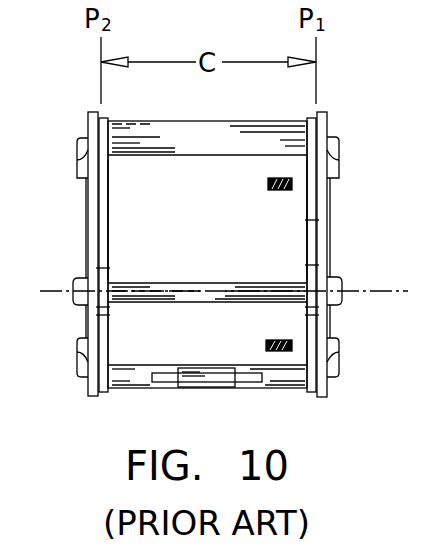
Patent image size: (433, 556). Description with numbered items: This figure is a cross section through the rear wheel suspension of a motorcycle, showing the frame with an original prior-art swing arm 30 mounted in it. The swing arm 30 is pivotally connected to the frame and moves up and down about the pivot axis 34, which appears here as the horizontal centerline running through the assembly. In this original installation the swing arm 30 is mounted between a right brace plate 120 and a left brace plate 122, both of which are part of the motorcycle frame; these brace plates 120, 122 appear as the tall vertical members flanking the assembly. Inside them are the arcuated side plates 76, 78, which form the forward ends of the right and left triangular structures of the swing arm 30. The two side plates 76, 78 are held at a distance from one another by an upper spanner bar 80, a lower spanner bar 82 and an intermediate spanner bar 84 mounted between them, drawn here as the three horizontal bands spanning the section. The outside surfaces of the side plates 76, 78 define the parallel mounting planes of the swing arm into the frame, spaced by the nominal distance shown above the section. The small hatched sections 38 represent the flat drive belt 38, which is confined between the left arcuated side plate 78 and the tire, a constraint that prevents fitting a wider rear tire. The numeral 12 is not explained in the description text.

The housing 12 is at (270, 231).
The swing arm 30 is at (321, 88).
The pivot axis 34 is at (378, 290).
The flat drive belt 38 is at (278, 191).
The arcuated side plate 76 is at (110, 194).
The arcuated side plate 78 is at (307, 218).
The upper spanner bar 80 is at (200, 130).
The lower spanner bar 82 is at (148, 389).
The intermediate spanner bar 84 is at (170, 285).
The right brace plate 120 is at (87, 125).
The left brace plate 122 is at (322, 122).